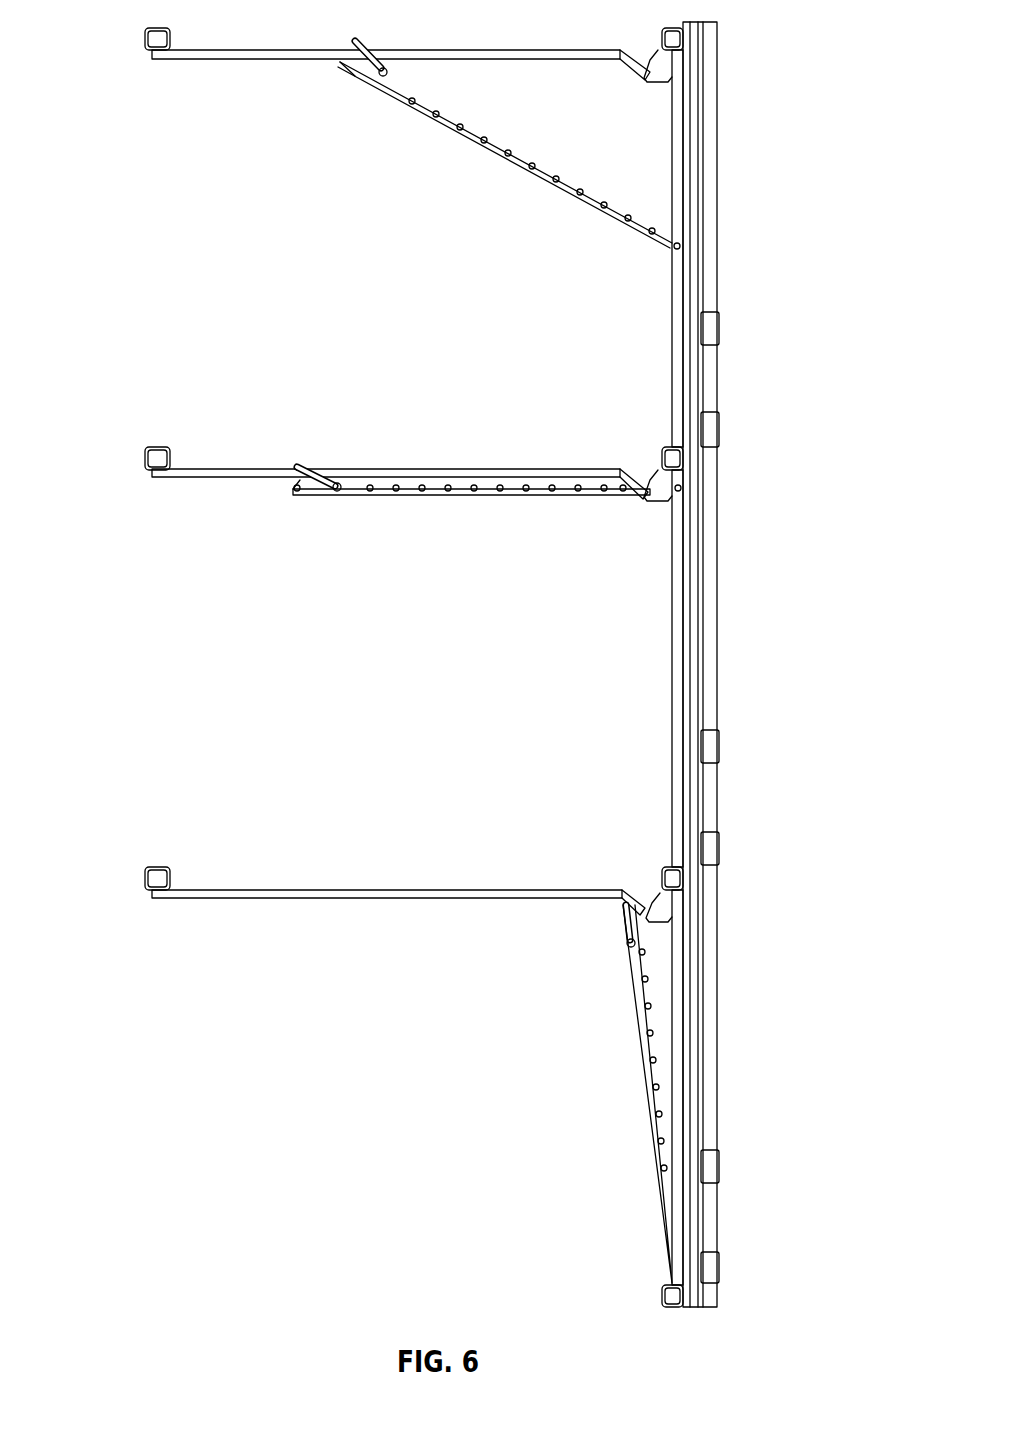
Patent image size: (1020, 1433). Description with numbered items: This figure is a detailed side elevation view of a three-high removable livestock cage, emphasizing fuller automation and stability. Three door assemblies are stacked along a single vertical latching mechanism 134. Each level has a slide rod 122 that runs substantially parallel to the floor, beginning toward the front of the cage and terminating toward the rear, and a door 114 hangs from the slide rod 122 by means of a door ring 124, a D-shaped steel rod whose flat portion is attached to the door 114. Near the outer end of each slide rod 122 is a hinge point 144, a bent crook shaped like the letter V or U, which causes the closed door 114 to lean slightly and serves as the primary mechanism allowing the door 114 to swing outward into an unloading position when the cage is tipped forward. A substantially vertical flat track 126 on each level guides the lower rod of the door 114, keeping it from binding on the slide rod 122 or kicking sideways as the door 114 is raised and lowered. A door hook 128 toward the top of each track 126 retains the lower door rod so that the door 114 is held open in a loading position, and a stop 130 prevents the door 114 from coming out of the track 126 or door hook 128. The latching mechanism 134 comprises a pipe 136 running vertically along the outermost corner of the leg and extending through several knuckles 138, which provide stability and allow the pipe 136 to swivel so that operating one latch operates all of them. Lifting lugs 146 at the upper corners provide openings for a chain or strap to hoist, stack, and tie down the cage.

The door 114 is at (545, 168).
The slide rod 122 is at (470, 50).
The door ring 124 is at (375, 45).
The track 126 is at (678, 318).
The door hook 128 is at (655, 78).
The stop 130 is at (355, 68).
The latching mechanism 134 is at (722, 593).
The pipe 136 is at (710, 515).
The knuckle 138 is at (710, 328).
The hinge point 144 is at (632, 50).
The lifting lug 146 is at (152, 38).